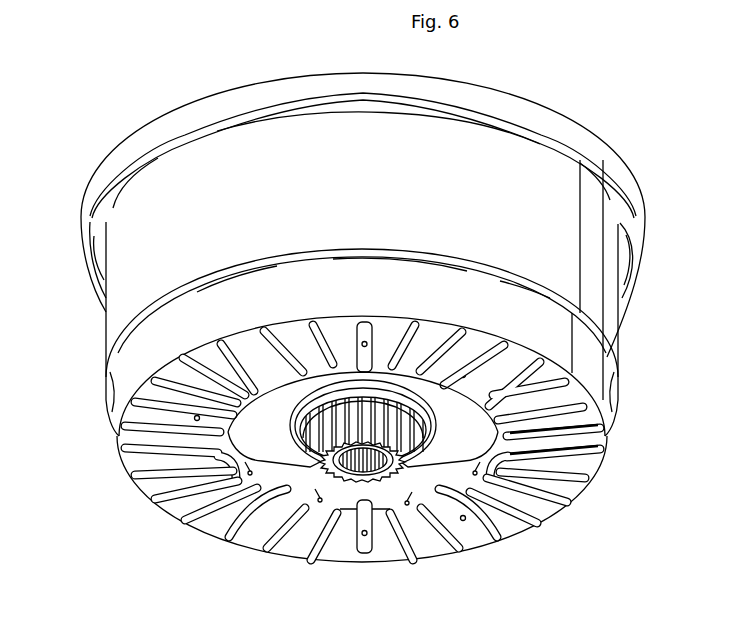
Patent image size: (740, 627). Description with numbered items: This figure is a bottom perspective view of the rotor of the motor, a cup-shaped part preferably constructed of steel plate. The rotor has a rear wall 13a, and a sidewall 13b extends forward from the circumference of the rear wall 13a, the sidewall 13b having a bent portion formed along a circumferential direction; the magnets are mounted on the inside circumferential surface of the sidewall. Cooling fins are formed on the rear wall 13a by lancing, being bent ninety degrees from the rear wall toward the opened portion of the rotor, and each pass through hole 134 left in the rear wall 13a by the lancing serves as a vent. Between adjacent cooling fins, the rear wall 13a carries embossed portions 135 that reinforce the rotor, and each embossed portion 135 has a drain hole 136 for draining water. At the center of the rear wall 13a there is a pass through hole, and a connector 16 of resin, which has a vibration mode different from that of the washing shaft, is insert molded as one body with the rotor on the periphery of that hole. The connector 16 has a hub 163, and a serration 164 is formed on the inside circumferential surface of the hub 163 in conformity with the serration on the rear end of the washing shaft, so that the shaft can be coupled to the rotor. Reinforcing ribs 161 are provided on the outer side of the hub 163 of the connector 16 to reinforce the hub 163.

The rear wall 13a is at (135, 443).
The sidewall 13b is at (117, 306).
The pass through hole 134 is at (550, 376).
The embossed portion 135 is at (508, 470).
The drain hole 136 is at (230, 460).
The connector 16 is at (342, 474).
The reinforcing rib 161 is at (417, 395).
The hub 163 is at (394, 474).
The serration 164 is at (367, 473).